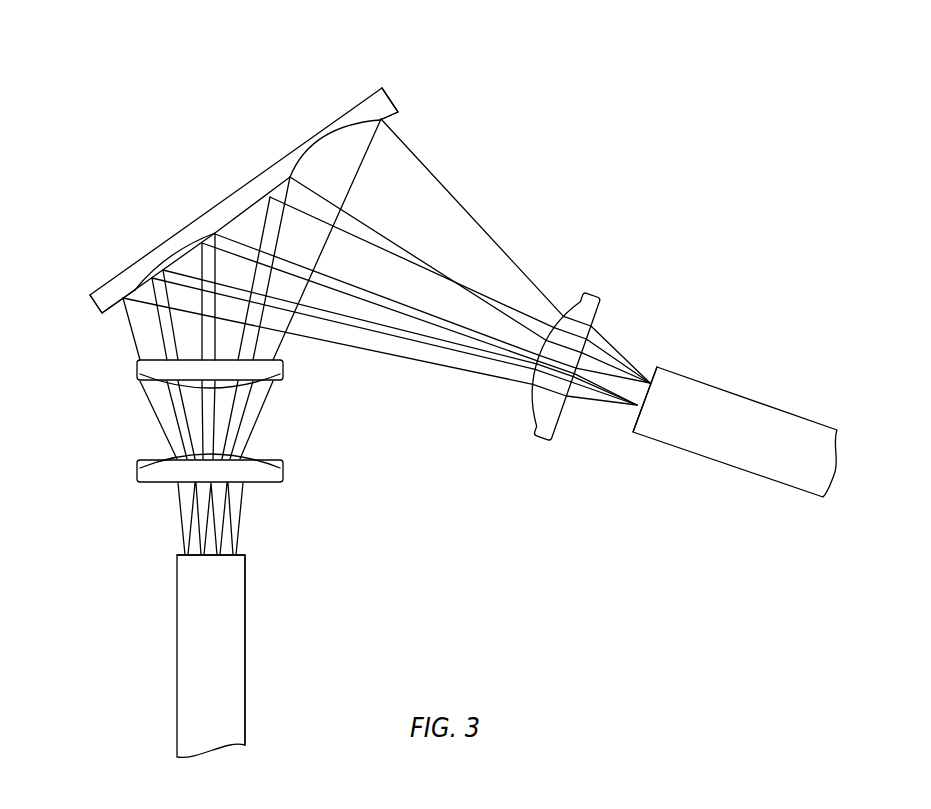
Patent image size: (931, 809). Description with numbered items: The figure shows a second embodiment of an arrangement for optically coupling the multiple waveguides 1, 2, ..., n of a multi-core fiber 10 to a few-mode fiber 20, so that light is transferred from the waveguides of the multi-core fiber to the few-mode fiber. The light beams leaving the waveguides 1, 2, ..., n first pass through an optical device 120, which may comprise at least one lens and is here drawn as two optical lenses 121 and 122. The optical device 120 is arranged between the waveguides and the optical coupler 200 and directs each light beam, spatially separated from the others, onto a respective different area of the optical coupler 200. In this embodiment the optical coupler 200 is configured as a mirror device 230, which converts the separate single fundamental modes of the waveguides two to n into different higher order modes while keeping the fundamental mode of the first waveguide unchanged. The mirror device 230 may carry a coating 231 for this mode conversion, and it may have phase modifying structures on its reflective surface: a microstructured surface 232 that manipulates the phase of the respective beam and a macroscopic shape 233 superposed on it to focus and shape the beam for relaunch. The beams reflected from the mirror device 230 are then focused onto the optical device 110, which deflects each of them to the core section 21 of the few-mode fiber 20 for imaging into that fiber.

The multi-core fiber 10 is at (177, 652).
The multiple waveguides 1, 2, ..., n is at (232, 588).
The few-mode fiber 20 is at (763, 402).
The core section 21 is at (707, 403).
The optical device 110 is at (597, 303).
The optical device 120 is at (192, 428).
The optical lens 121 is at (277, 478).
The optical lens 122 is at (277, 369).
The optical coupler 200 is at (388, 90).
The mirror device 230 is at (207, 213).
The coating 231 is at (132, 288).
The structured surface 232 is at (321, 133).
The macroscopic shape 233 is at (380, 120).